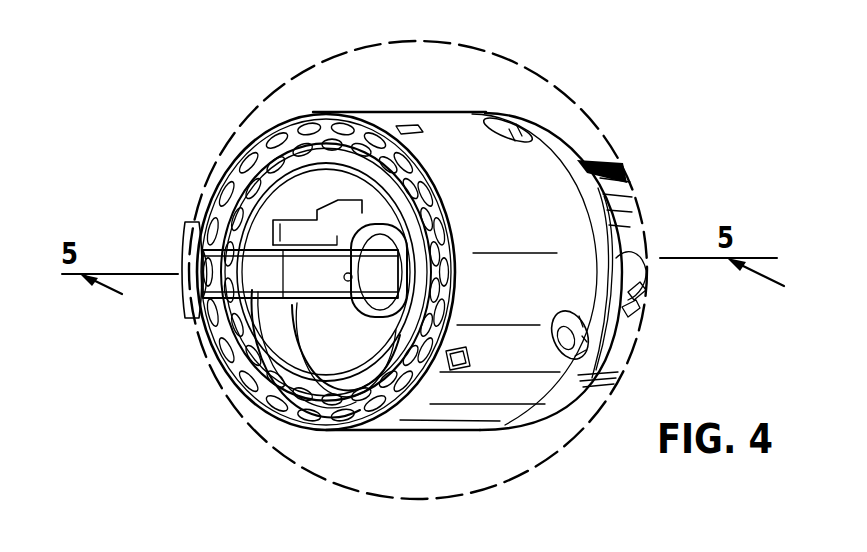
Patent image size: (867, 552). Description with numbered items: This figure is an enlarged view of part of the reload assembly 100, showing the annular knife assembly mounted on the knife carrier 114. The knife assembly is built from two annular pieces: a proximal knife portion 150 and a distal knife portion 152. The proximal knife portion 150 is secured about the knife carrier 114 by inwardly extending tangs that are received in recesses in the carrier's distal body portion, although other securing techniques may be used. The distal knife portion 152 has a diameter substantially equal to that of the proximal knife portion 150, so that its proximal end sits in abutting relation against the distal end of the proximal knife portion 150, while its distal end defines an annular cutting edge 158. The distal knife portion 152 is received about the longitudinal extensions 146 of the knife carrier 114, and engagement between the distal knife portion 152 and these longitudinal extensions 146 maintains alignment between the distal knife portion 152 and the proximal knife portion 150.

The reload assembly 100 is at (421, 227).
The knife carrier 114 is at (350, 193).
The longitudinal extensions 146 is at (292, 222).
The proximal knife portion 150 is at (324, 358).
The distal knife portion 152 is at (272, 328).
The annular cutting edge 158 is at (282, 332).